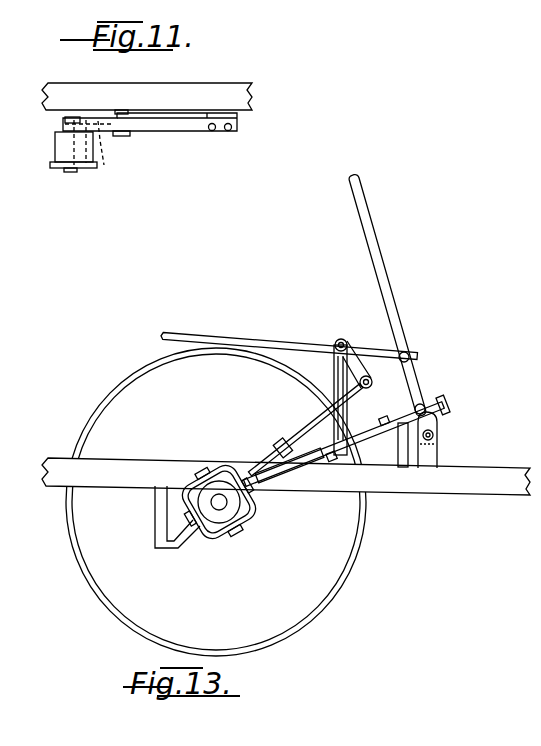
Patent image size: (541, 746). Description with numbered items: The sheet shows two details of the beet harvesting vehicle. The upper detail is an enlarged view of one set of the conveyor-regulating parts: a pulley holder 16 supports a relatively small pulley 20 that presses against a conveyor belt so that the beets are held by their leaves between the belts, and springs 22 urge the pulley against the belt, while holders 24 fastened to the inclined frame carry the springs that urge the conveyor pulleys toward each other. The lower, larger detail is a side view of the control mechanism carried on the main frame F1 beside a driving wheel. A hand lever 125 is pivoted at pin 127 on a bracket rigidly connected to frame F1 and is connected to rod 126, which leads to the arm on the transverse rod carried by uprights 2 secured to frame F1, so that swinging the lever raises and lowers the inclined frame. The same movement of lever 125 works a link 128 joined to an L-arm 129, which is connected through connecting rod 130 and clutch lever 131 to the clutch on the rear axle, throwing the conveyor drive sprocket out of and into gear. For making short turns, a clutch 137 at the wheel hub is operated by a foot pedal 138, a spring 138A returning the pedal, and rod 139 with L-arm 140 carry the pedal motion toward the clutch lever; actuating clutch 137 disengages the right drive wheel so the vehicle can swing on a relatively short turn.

In FIG. 11, the uprights 2 is at (237, 118).
In FIG. 11, the springs 22 is at (166, 130).
In FIG. 11, the pulley 20 is at (56, 147).
In FIG. 11, the holders 24 is at (58, 158).
In FIG. 11, the pulley holder 16 is at (104, 150).
In FIG. 13, the frame F1 is at (104, 476).
In FIG. 13, the hand lever 125 is at (368, 242).
In FIG. 13, the rod 126 is at (258, 322).
In FIG. 13, the pin 127 is at (440, 442).
In FIG. 13, the link 128 is at (406, 406).
In FIG. 13, the L-arm 129 is at (446, 412).
In FIG. 13, the connecting rod 130 is at (368, 450).
In FIG. 13, the clutch lever 131 is at (282, 480).
In FIG. 13, the clutch 137 is at (216, 520).
In FIG. 13, the foot pedal 138 is at (362, 316).
In FIG. 13, the spring 138A is at (333, 378).
In FIG. 13, the rod 139 is at (330, 412).
In FIG. 13, the L-arm 140 is at (276, 450).